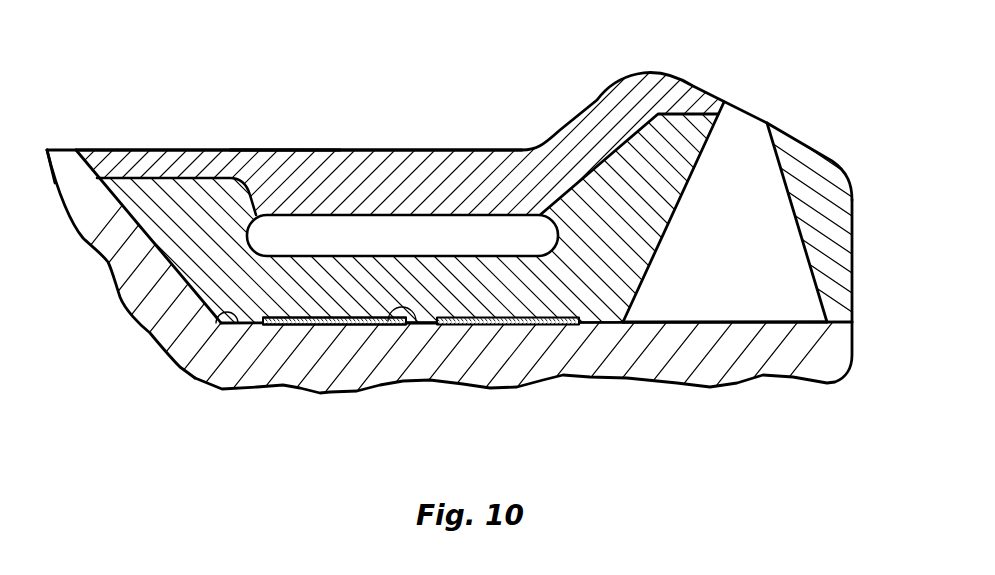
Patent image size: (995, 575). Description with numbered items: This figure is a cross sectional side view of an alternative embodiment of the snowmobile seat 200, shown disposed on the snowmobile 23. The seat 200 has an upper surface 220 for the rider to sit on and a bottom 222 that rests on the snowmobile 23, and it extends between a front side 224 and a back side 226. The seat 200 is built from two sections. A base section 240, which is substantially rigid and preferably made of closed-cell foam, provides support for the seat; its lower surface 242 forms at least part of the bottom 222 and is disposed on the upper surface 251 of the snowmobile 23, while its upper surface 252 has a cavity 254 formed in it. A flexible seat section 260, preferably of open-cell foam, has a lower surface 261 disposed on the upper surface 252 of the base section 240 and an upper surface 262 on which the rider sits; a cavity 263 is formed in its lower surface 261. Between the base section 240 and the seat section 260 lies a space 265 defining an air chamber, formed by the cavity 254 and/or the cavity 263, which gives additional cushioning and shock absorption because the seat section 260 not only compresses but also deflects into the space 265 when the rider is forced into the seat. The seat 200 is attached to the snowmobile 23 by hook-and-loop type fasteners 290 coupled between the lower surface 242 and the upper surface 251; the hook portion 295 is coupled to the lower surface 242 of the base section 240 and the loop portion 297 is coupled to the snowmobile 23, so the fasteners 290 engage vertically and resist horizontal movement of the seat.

The snowmobile seat 200 is at (788, 76).
The upper surface 220 is at (127, 150).
The front side 224 is at (83, 168).
The back side 226 is at (853, 263).
The seat section 260 is at (353, 180).
The lower surface of the seat section 261 is at (197, 178).
The upper surface of the seat section 262 is at (280, 150).
The cavity 263 is at (459, 213).
The space 265 is at (316, 249).
The base section 240 is at (199, 280).
The lower surface of the base section 242 is at (218, 321).
The upper surface of the base section 252 is at (172, 236).
The cavity 254 is at (295, 258).
The hook-and-loop type fasteners 290 is at (324, 334).
The hook portion 295 is at (417, 323).
The loop portion 297 is at (355, 326).
The bottom 222 is at (596, 323).
The upper surface of the snowmobile 251 is at (712, 323).
The snowmobile 23 is at (805, 360).